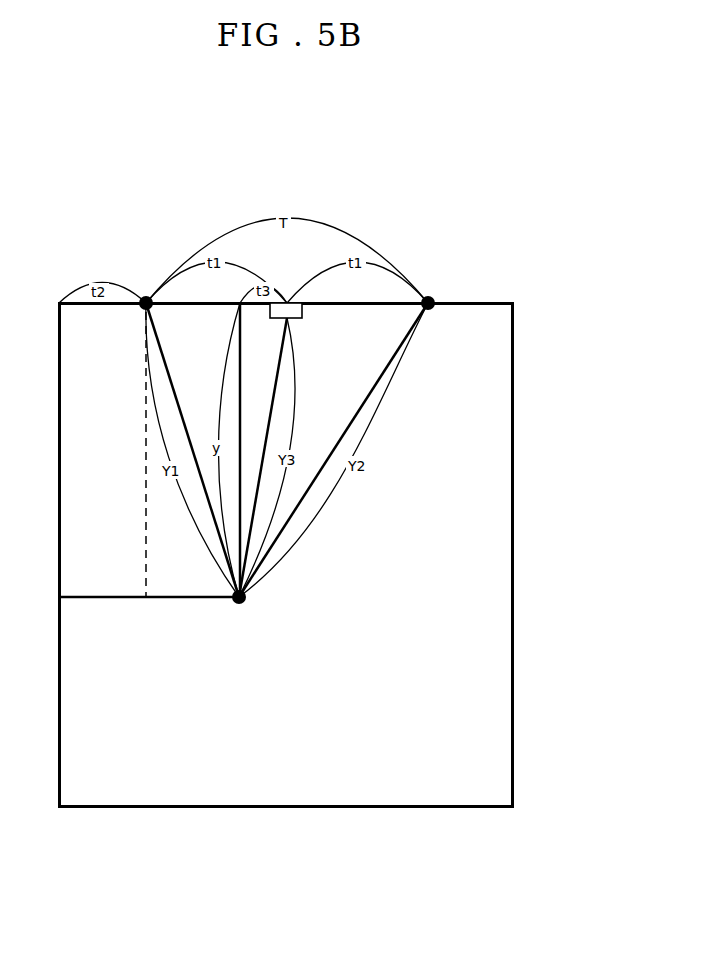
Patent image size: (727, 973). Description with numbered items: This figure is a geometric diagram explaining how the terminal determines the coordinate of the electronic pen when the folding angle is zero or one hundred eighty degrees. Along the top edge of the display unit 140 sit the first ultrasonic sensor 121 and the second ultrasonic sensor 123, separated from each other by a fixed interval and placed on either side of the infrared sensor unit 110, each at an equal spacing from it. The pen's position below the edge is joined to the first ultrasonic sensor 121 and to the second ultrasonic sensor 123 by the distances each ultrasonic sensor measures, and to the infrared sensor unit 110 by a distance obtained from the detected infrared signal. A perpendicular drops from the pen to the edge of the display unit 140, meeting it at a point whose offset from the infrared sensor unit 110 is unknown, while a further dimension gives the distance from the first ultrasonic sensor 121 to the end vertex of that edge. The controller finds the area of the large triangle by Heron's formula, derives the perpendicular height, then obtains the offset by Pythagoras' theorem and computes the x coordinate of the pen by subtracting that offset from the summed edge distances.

The infrared sensor unit 110 is at (303, 311).
The first ultrasonic sensor 121 is at (146, 298).
The second ultrasonic sensor 123 is at (428, 298).
The display unit 140 is at (500, 512).